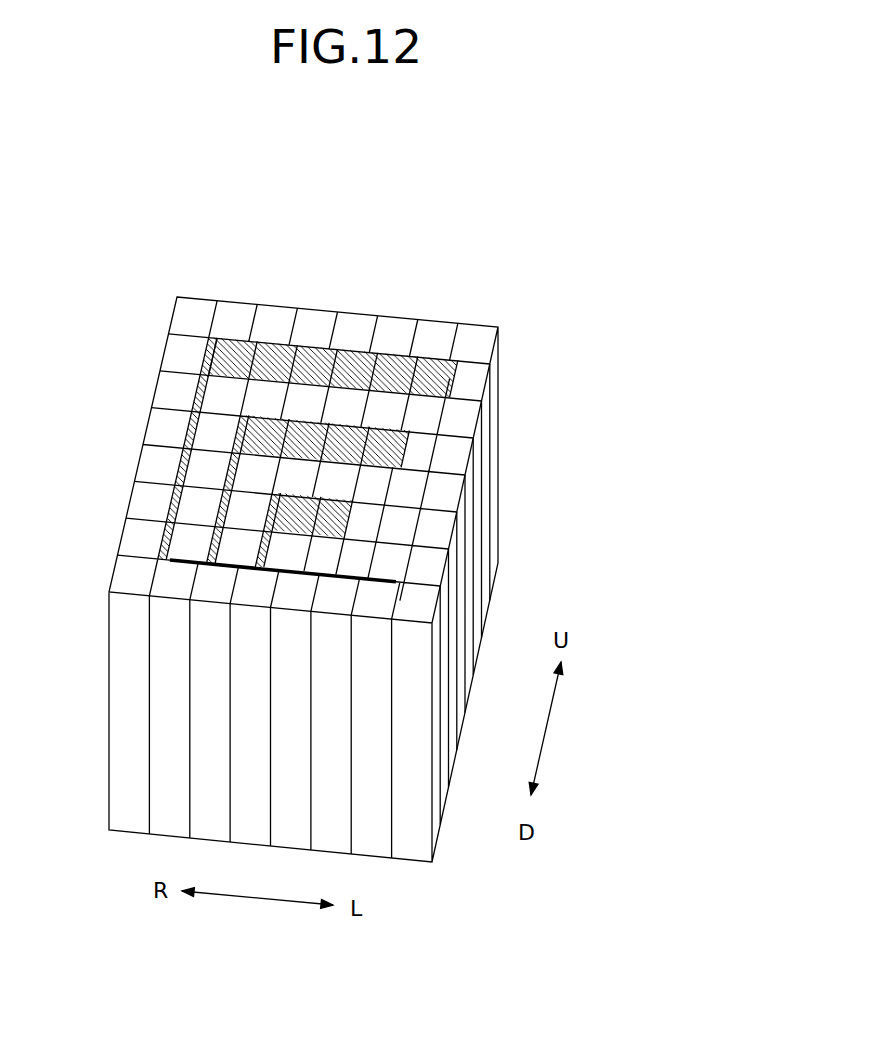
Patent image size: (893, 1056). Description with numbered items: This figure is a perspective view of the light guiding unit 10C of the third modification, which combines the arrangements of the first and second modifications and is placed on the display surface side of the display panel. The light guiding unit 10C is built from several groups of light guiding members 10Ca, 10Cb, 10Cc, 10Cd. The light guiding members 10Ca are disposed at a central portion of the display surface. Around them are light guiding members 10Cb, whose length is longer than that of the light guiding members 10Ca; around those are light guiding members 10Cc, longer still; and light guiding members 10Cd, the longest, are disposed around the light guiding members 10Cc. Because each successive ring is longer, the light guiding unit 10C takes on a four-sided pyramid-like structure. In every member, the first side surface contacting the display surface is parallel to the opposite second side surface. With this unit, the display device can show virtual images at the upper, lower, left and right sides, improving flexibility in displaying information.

The light guiding unit 10C is at (360, 488).
The light guiding members 10Ca is at (302, 545).
The light guiding members 10Cb is at (260, 465).
The light guiding members 10Cc is at (200, 470).
The light guiding members 10Cd is at (128, 543).